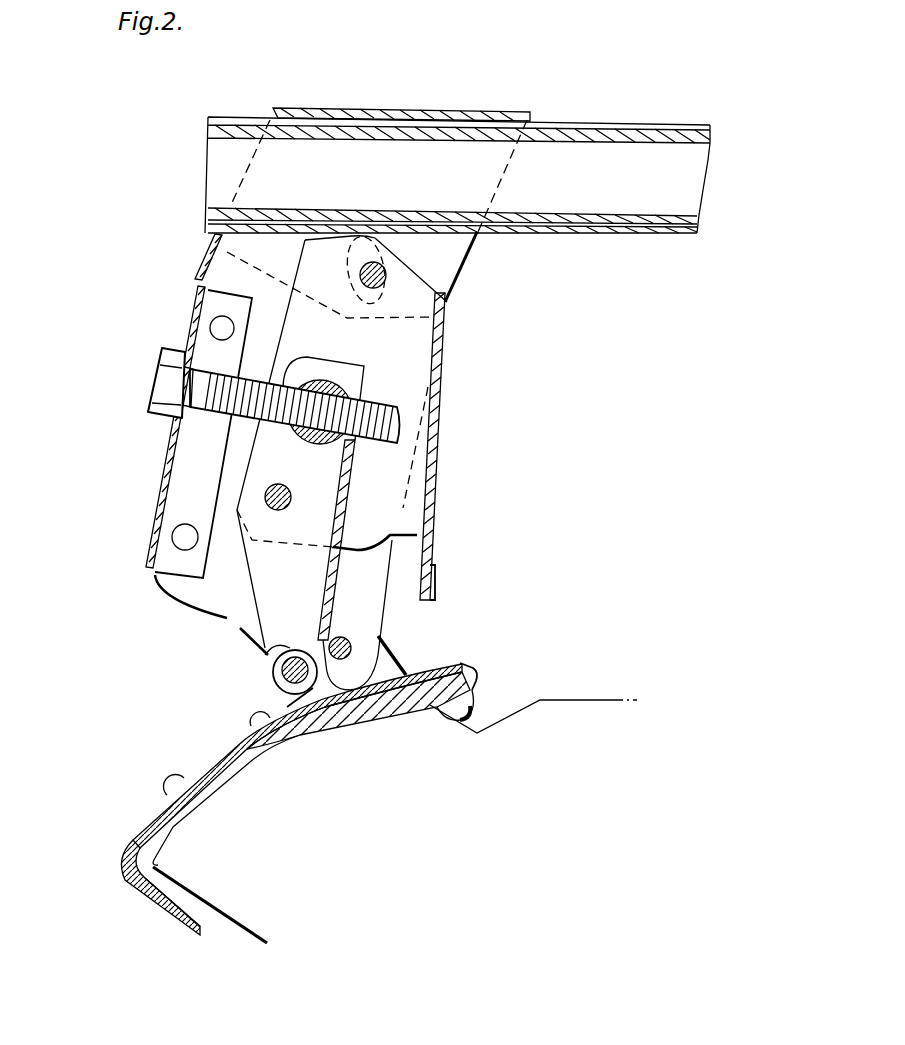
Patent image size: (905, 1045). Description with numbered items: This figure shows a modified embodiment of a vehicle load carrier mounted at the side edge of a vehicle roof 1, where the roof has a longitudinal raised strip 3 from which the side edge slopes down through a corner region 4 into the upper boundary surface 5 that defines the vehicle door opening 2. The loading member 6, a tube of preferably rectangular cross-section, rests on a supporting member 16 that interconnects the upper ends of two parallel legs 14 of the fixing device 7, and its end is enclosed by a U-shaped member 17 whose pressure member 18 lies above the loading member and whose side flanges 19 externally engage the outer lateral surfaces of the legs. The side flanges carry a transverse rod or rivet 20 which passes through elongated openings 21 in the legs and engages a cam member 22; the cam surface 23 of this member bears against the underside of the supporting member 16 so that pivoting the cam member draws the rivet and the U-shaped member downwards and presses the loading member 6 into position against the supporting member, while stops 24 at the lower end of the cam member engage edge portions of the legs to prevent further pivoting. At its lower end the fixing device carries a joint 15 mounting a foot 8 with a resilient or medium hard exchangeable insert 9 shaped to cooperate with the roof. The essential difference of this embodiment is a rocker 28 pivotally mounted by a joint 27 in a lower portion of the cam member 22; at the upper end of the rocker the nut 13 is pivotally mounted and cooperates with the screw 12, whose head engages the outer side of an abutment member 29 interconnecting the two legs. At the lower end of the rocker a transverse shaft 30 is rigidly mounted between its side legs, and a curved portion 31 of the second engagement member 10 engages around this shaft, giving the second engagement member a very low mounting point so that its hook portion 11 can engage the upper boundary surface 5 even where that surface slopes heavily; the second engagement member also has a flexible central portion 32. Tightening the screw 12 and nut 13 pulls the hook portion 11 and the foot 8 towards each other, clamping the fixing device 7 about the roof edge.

The vehicle roof 1 is at (603, 700).
The vehicle door opening 2 is at (75, 1000).
The longitudinal raised strip 3 is at (450, 713).
The corner region 4 is at (140, 887).
The upper boundary surface 5 is at (240, 933).
The loading member 6 is at (575, 138).
The fixing device 7 is at (612, 503).
The foot 8 is at (473, 670).
The exchangeable insert 9 is at (458, 700).
The second engagement member 10 is at (158, 813).
The hook portion 11 is at (170, 913).
The screw 12 is at (173, 347).
The nut 13 is at (312, 385).
The legs 14 is at (378, 594).
The joint 15 is at (352, 655).
The supporting member 16 is at (470, 245).
The U-shaped member 17 is at (290, 150).
The pressure member 18 is at (363, 117).
The side flanges 19 is at (413, 302).
The transverse rod 20 is at (376, 262).
The elongated openings 21 is at (352, 258).
The cam member 22 is at (413, 506).
The cam surface 23 is at (312, 242).
The stops 24 is at (433, 578).
The joint 27 is at (290, 494).
The rocker 28 is at (262, 598).
The abutment member 29 is at (175, 443).
The transverse shaft 30 is at (278, 681).
The curved portion 31 is at (262, 647).
The flexible central portion 32 is at (225, 740).